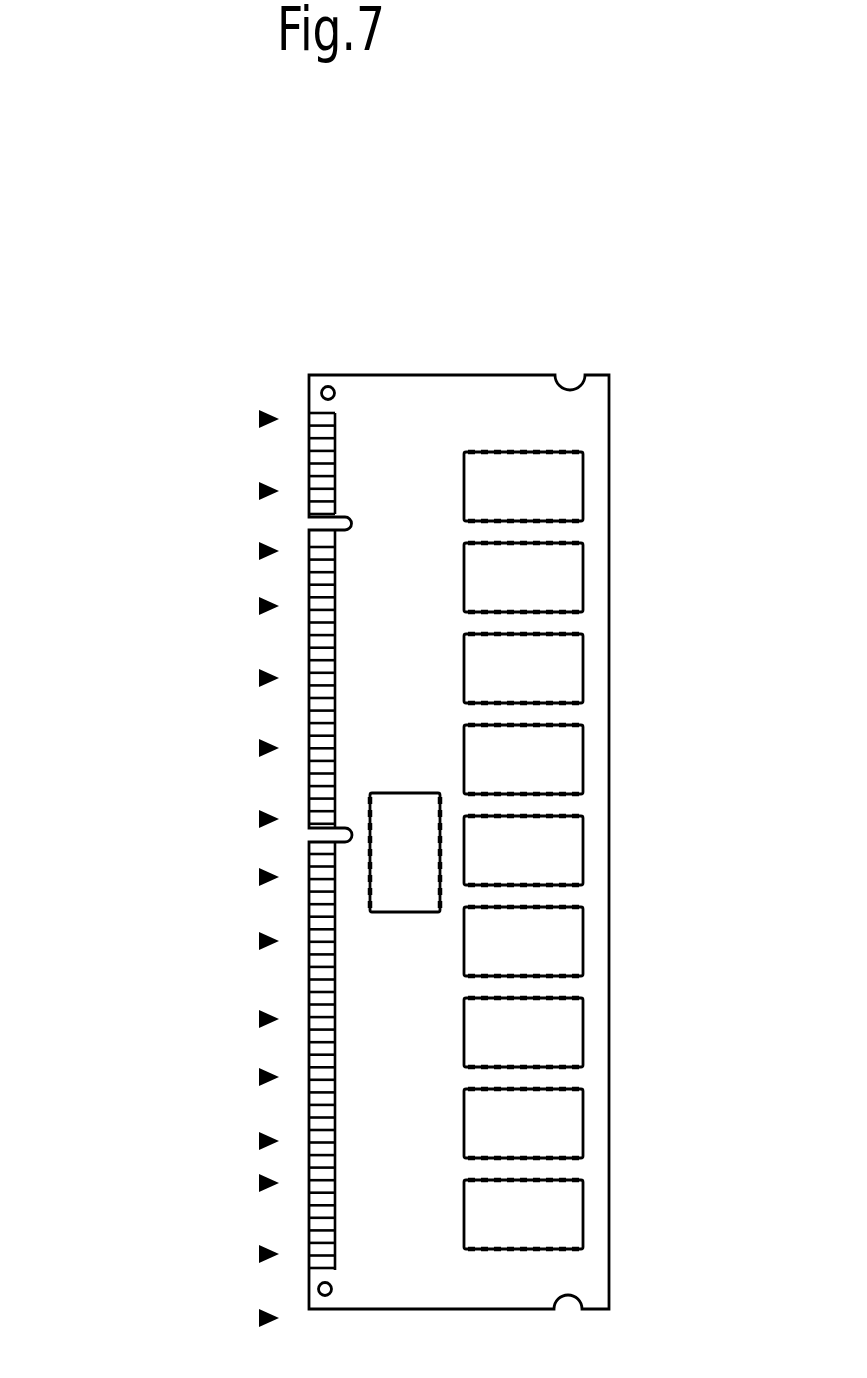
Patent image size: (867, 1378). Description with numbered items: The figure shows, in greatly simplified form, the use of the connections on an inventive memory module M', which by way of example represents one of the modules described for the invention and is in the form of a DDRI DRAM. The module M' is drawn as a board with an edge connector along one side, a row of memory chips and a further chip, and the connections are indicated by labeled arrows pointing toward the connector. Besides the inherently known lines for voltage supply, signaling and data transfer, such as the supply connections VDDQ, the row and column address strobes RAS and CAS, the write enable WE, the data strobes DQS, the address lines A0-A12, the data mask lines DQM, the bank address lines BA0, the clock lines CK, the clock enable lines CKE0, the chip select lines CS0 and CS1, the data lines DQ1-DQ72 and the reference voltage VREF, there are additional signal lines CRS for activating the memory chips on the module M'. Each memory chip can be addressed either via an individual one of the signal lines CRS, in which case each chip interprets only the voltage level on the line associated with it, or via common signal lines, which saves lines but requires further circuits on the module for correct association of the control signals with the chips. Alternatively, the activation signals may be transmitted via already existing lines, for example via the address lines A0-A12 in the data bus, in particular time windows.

The memory module M' is at (507, 854).
The power supply pins VDDQ, VSSQ, VDD, VSS VDDQ is at (262, 419).
The row address strobe signal RAS is at (262, 491).
The column address strobe signal CAS is at (262, 551).
The write enable signal WE is at (262, 606).
The data strobe signals DQS 0-8 DQS is at (262, 678).
The address lines A0-A12 is at (262, 748).
The data mask signals DQM0-8 DQM is at (262, 819).
The bank address signals BA0, BA1 BA0 is at (262, 877).
The clock signals CK, / CK is at (262, 941).
The clock enable signals CKE0, CKE1 CKE0 is at (262, 1019).
The signal lines CRS is at (262, 1077).
The chip select signal CS0 is at (262, 1141).
The chip select signal CS1 is at (262, 1183).
The data signals DQ1-DQ72 is at (262, 1254).
The reference voltage VREF is at (262, 1318).